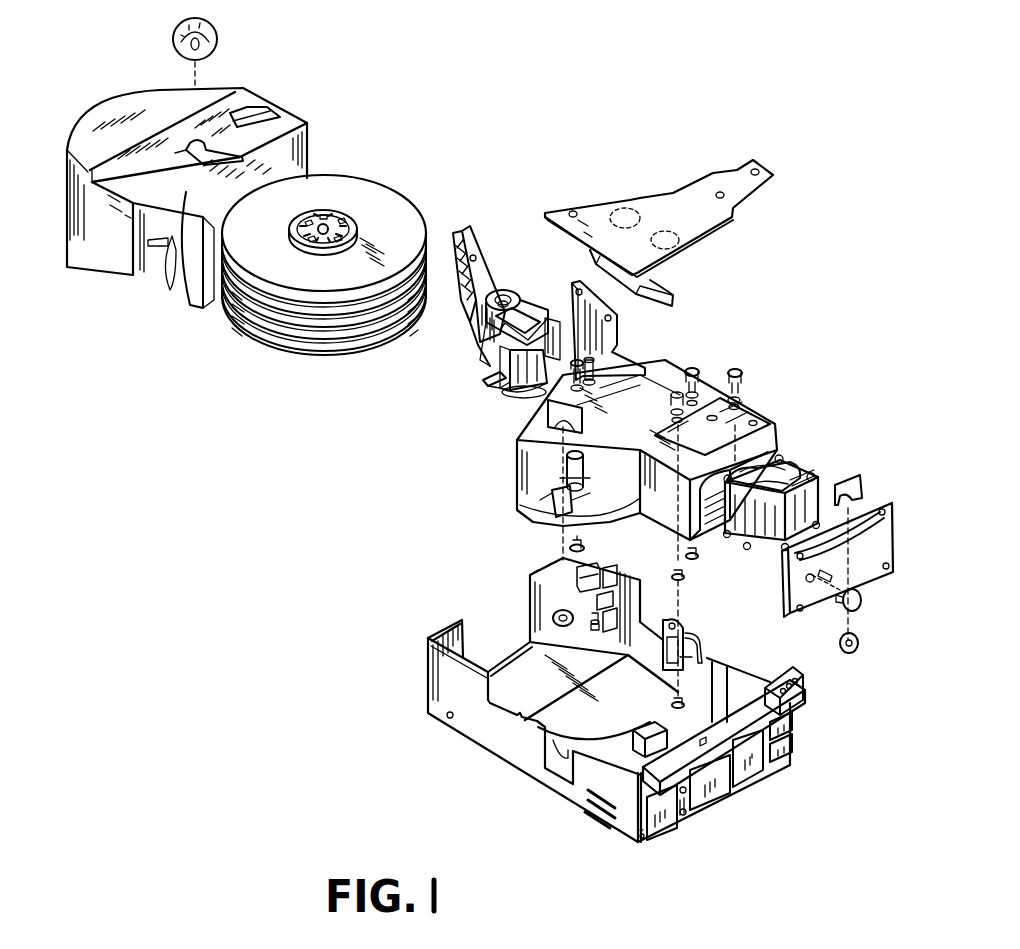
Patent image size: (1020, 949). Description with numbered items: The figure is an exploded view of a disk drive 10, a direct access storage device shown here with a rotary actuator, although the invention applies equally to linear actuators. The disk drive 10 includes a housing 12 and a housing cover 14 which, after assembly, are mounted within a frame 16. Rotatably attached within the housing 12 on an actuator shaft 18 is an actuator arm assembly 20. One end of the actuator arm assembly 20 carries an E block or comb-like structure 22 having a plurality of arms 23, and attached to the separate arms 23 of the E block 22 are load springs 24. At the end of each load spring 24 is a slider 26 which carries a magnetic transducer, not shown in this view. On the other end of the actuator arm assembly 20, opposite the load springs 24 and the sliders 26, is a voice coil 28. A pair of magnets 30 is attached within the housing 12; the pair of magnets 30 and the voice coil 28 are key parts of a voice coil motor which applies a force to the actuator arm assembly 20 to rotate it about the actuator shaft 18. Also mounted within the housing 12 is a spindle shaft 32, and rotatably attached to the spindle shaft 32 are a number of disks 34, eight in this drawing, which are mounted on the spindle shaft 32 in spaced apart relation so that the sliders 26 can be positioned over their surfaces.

The disk drive 10 is at (470, 163).
The housing 12 is at (673, 377).
The housing cover 14 is at (105, 247).
The frame 16 is at (490, 740).
The actuator shaft 18 is at (502, 302).
The actuator arm assembly 20 is at (490, 352).
The E block 22 is at (458, 298).
The arms 23 is at (488, 277).
The load springs 24 is at (465, 243).
The slider 26 is at (453, 235).
The voice coil 28 is at (523, 373).
The pair of magnets 30 is at (795, 465).
The spindle shaft 32 is at (323, 221).
The disks 34 is at (283, 340).